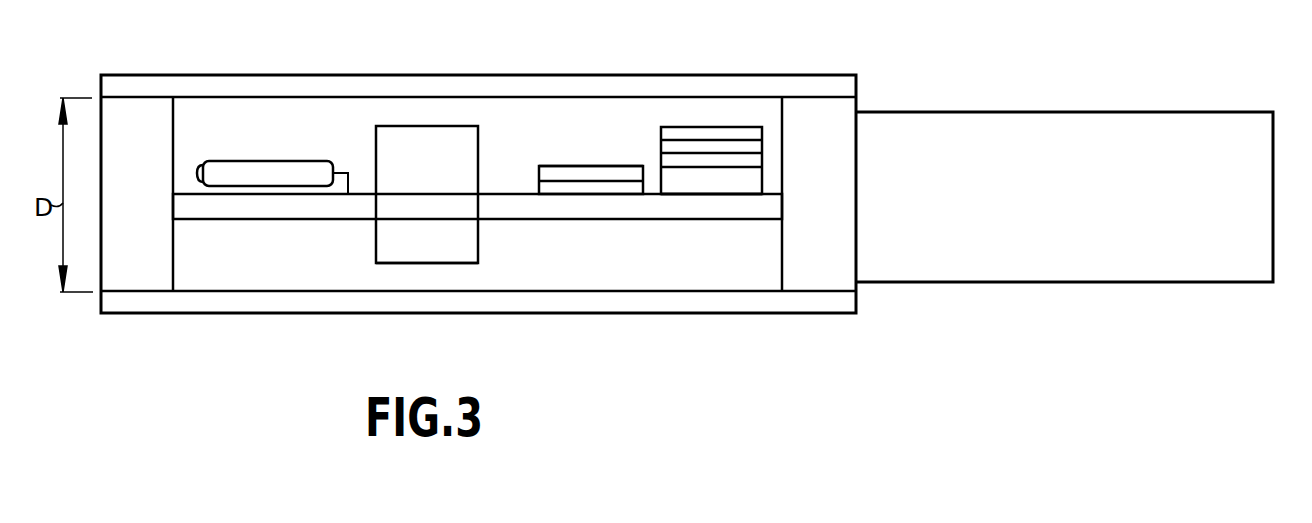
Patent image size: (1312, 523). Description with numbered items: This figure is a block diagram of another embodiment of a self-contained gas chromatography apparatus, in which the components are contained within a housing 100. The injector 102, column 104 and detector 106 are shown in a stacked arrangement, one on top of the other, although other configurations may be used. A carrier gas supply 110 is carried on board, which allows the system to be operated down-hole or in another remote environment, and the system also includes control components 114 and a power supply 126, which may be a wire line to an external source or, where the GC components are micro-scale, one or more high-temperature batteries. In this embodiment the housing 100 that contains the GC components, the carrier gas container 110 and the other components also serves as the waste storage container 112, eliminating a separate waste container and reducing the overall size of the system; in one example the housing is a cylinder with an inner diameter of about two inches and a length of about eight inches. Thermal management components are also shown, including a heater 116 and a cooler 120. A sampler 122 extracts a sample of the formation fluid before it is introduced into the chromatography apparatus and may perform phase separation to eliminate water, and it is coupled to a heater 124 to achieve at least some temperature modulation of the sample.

The housing 100 is at (505, 87).
The injector 102 is at (675, 163).
The gas chromatography column 104 is at (727, 145).
The detector 106 is at (682, 133).
The carrier gas supply 110 is at (265, 173).
The waste storage component 112 is at (246, 110).
The control components 114 is at (440, 140).
The heater 116 is at (738, 185).
The cooler 120 is at (1060, 274).
The sampler 122 is at (619, 174).
The heater 124 is at (583, 188).
The power supply 126 is at (422, 250).